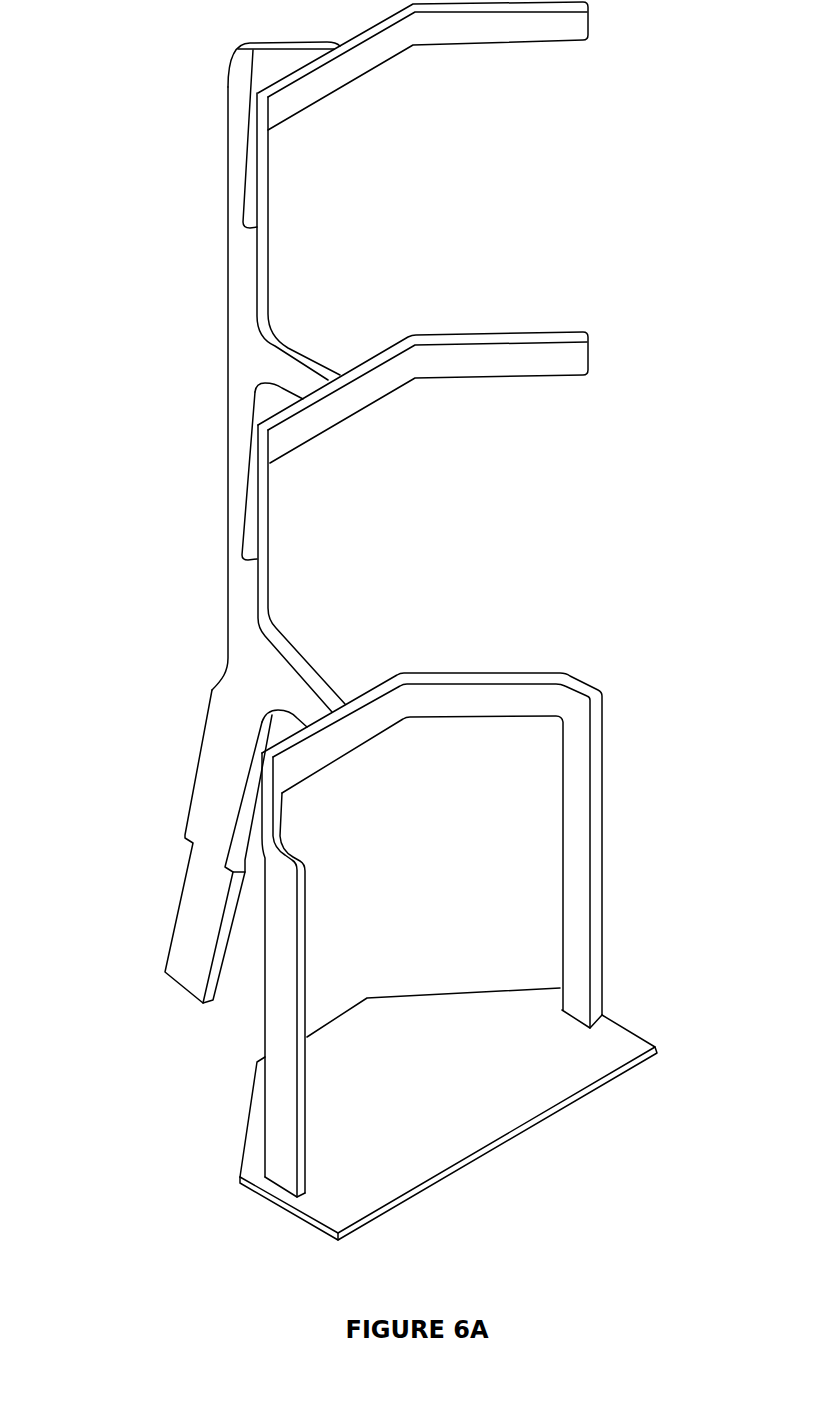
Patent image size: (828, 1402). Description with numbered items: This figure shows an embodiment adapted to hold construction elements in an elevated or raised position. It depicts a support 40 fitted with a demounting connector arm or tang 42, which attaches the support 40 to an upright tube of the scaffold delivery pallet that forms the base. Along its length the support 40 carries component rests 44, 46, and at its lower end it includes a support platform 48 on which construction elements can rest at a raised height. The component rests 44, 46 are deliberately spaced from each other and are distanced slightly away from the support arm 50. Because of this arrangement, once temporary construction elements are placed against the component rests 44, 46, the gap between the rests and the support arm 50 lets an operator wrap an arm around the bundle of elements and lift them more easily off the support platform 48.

The support 40 is at (348, 552).
The demounting connector arm or tang 42 is at (192, 937).
The component rest 44 is at (522, 358).
The component rest 46 is at (540, 27).
The support platform 48 is at (522, 1092).
The support arm 50 is at (247, 367).